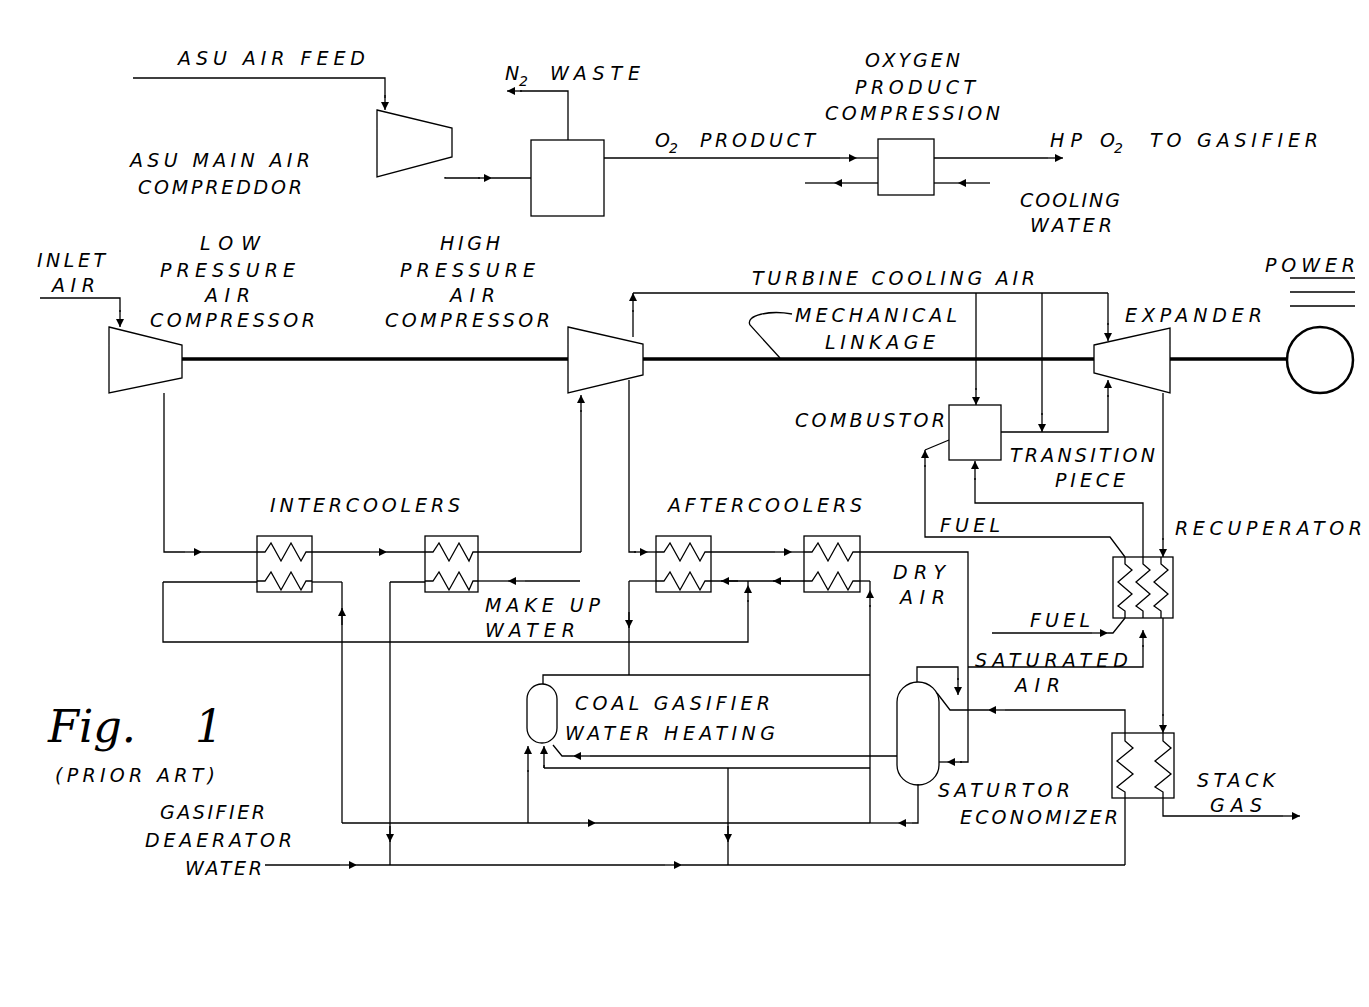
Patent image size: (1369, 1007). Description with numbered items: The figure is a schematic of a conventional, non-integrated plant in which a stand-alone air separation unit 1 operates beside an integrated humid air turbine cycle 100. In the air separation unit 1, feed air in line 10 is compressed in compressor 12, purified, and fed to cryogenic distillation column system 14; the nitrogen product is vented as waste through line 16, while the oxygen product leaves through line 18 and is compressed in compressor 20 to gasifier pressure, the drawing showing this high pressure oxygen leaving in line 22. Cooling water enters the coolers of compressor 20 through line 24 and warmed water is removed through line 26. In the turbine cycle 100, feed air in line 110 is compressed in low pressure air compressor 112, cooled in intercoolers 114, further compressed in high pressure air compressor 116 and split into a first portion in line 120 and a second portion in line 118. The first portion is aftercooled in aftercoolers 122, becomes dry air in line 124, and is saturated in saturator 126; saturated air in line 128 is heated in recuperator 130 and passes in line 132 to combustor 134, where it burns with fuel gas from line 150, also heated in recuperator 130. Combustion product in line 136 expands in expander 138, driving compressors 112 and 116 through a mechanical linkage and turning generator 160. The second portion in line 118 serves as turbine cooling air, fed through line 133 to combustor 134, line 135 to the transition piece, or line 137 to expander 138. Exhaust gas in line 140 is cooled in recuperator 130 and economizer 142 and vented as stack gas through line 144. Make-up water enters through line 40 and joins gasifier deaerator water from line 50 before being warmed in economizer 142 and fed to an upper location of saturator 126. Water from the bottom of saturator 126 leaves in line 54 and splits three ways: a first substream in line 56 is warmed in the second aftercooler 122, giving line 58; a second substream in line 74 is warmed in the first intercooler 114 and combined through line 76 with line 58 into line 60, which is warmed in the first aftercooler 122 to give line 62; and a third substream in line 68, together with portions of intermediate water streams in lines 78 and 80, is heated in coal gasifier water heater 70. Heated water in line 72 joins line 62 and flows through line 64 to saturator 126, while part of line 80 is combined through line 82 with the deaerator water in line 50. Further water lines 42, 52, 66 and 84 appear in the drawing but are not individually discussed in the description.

The air separation unit 1 is at (1096, 90).
The feed air line 10 is at (273, 80).
The compressor 12 is at (421, 153).
The cryogenic distillation column system 14 is at (581, 204).
The nitrogen product line 16 is at (568, 122).
The oxygen product line 18 is at (659, 160).
The compressor 20 is at (915, 186).
The high pressure oxygen to gasifier 22 is at (969, 157).
The cooling water feed line 24 is at (945, 184).
The warmed cooling water line 26 is at (858, 184).
The make-up water line 40 is at (537, 582).
The water line 42 is at (395, 727).
The gasifier deaerator water line 50 is at (333, 863).
The heated water line to saturator 52 is at (1072, 712).
The saturator bottom water line 54 is at (919, 803).
The first substream line 56 is at (870, 787).
The warmed water line from second aftercooler 58 is at (795, 582).
The combined warmed water line 60 is at (738, 582).
The heated water line 62 is at (629, 650).
The saturator feed water line 64 is at (812, 675).
The water line 66 is at (838, 823).
The third substream line 68 is at (528, 797).
The coal gasifier water heater 70 is at (554, 729).
The heated water line 72 is at (597, 674).
The second substream line 74 is at (434, 823).
The intercooler-warmed water line 76 is at (445, 643).
The intermediate water stream line 78 is at (806, 755).
The lower intermediate water stream line 80 is at (787, 770).
The water combining line 82 is at (727, 790).
The water line 84 is at (560, 770).
The integrated humid air turbine cycle 100 is at (276, 675).
The feed air line 110 is at (75, 298).
The low pressure air compressor 112 is at (152, 373).
The intercoolers 114 is at (447, 537).
The high pressure air compressor 116 is at (614, 373).
The second compressed air portion line 118 is at (637, 328).
The first compressed air portion line 120 is at (629, 420).
The aftercoolers 122 is at (845, 537).
The dry air line 124 is at (968, 608).
The saturator 126 is at (932, 736).
The saturated air line 128 is at (1063, 667).
The recuperator 130 is at (1174, 605).
The heated saturated air line 132 is at (1023, 504).
The turbine cooling air line to combustor 133 is at (977, 328).
The combustor 134 is at (987, 447).
The turbine cooling air line to transition piece 135 is at (1043, 328).
The combustion product line 136 is at (1107, 413).
The turbine cooling air line to expander 137 is at (1109, 307).
The expander 138 is at (1147, 373).
The exhaust gas line 140 is at (1166, 470).
The economizer 142 is at (1172, 762).
The stack gas line 144 is at (1225, 816).
The fuel gas line 150 is at (1012, 632).
The generator 160 is at (1336, 371).